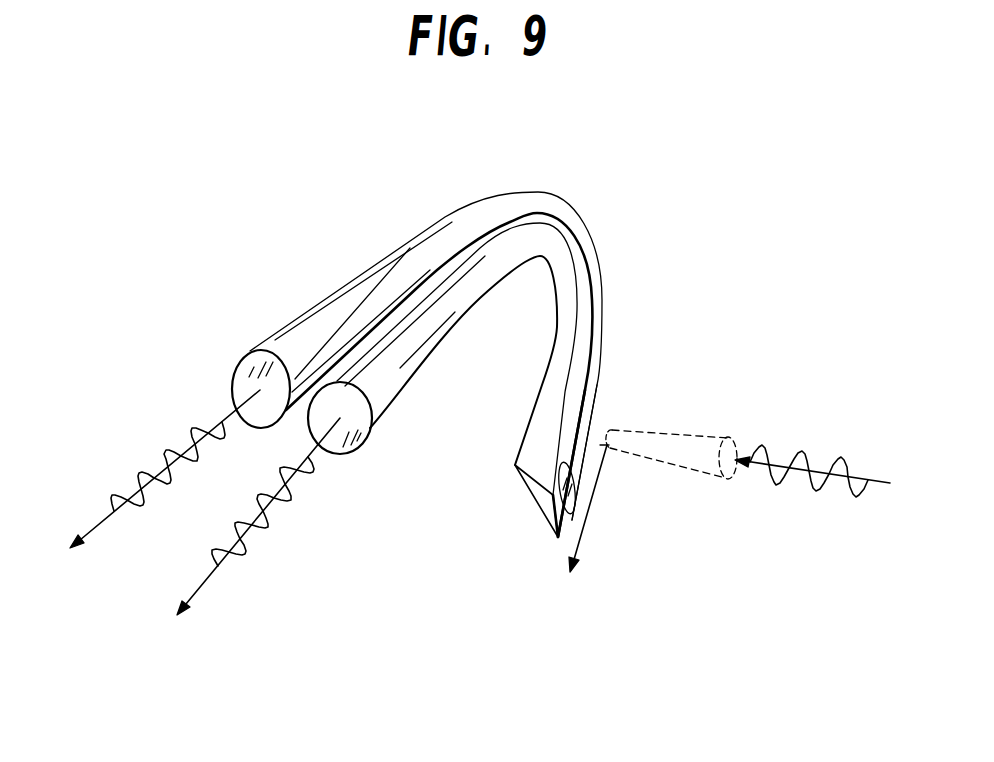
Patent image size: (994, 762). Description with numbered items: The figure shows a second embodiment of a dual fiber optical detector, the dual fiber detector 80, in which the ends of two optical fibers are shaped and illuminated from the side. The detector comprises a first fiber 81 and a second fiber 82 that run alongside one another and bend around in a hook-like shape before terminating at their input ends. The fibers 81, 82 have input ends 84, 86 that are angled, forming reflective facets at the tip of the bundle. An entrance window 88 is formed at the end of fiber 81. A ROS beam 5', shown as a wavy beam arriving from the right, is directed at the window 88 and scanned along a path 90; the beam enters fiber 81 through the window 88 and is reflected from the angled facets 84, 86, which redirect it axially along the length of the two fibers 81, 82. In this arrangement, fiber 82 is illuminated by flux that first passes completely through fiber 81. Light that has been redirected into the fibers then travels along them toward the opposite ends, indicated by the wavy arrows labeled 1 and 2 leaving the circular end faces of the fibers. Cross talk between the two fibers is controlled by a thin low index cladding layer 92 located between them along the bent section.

The dual fiber detector 80 is at (588, 178).
The fiber 81 is at (452, 223).
The fiber 82 is at (457, 290).
The input end 84 is at (545, 524).
The input end 86 is at (525, 491).
The entrance window 88 is at (574, 497).
The path 90 is at (582, 545).
The thin low index cladding layer 92 is at (565, 372).
The ROS beam 5' is at (748, 434).
The first input light beam 1 is at (166, 640).
The second input light beam 2 is at (154, 486).